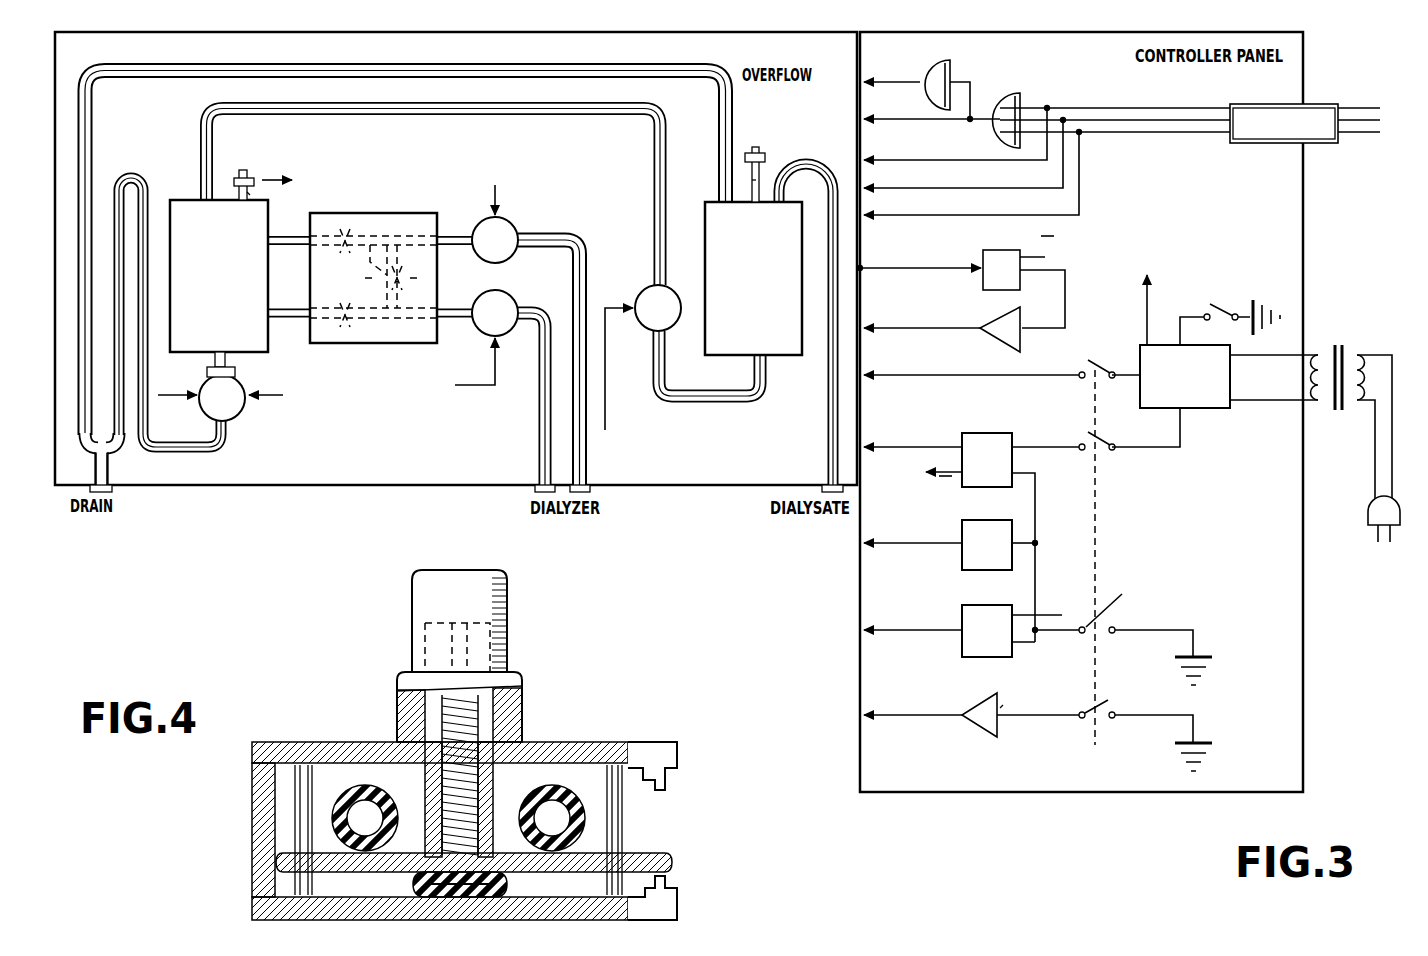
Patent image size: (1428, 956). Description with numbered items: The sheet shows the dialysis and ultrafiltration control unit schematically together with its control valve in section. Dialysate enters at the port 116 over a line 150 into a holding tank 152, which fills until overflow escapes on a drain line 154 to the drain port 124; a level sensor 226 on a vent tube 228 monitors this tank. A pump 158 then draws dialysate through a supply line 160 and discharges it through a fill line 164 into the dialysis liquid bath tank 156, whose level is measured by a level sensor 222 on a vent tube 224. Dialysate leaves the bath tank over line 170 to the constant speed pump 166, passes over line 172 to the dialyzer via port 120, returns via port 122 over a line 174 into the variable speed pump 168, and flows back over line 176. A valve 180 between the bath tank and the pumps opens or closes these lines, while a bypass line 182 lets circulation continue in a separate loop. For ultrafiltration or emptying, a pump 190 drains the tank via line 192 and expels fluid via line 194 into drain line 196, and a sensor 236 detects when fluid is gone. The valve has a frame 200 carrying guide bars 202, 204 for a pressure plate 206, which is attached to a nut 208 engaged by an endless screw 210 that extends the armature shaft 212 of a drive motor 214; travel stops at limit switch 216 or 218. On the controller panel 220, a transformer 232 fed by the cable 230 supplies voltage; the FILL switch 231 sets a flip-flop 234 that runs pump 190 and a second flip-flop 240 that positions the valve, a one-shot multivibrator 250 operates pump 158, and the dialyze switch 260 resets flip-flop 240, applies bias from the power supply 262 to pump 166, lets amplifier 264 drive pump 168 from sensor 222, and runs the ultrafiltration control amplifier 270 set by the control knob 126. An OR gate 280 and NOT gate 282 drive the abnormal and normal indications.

In FIG. 3, the drain line 154 is at (445, 67).
In FIG. 3, the fill line 164 is at (398, 113).
In FIG. 3, the line 194 is at (125, 176).
In FIG. 3, the drain line 196 is at (108, 462).
In FIG. 3, the drain port 124 is at (112, 489).
In FIG. 3, the line 150 is at (830, 366).
In FIG. 3, the port 116 is at (830, 485).
In FIG. 3, the supply line 160 is at (720, 393).
In FIG. 3, the line 172 is at (588, 268).
In FIG. 3, the port 120 is at (592, 490).
In FIG. 3, the line 174 is at (540, 402).
In FIG. 3, the port 122 is at (535, 485).
In FIG. 3, the line 170 is at (288, 243).
In FIG. 4, the line 170 is at (530, 801).
In FIG. 3, the line 176 is at (288, 317).
In FIG. 4, the line 176 is at (390, 803).
In FIG. 3, the dialysis liquid bath tank 156 is at (225, 236).
In FIG. 3, the holding tank 152 is at (762, 238).
In FIG. 3, the valve 180 is at (410, 213).
In FIG. 4, the valve 180 is at (575, 733).
In FIG. 3, the bypass line 182 is at (372, 250).
In FIG. 4, the bypass line 182 is at (505, 888).
In FIG. 3, the pump 166 is at (505, 232).
In FIG. 3, the pump 168 is at (505, 304).
In FIG. 3, the pump 158 is at (648, 292).
In FIG. 3, the pump 190 is at (234, 408).
In FIG. 3, the level sensor 222 is at (235, 178).
In FIG. 3, the vent tube 224 is at (247, 193).
In FIG. 3, the level sensor 226 is at (745, 157).
In FIG. 3, the vent tube 228 is at (752, 180).
In FIG. 3, the line 192 is at (213, 360).
In FIG. 3, the sensor 236 is at (236, 373).
In FIG. 3, the NOT gate 282 is at (940, 68).
In FIG. 3, the OR gate 280 is at (1020, 109).
In FIG. 3, the controller panel 220 is at (1305, 230).
In FIG. 3, the amplifier 264 is at (987, 318).
In FIG. 3, the power supply 262 is at (1207, 410).
In FIG. 3, the flip-flop 240 is at (981, 433).
In FIG. 3, the one-shot multivibrator 250 is at (968, 521).
In FIG. 3, the flip-flop 234 is at (966, 608).
In FIG. 3, the FILL switch 231 is at (1104, 604).
In FIG. 3, the ultrafiltration control amplifier 270 is at (975, 709).
In FIG. 3, the control knob 126 is at (1002, 703).
In FIG. 3, the dialyze switch 260 is at (1100, 725).
In FIG. 3, the transformer 232 is at (1346, 351).
In FIG. 3, the cable 230 is at (1375, 468).
In FIG. 4, the drive motor 214 is at (508, 603).
In FIG. 4, the armature shaft 212 is at (490, 646).
In FIG. 4, the nut 208 is at (492, 735).
In FIG. 4, the frame 200 is at (260, 812).
In FIG. 4, the limit switch 218 is at (677, 756).
In FIG. 4, the limit switch 216 is at (675, 898).
In FIG. 4, the guide bar 202 is at (305, 808).
In FIG. 4, the guide bar 204 is at (613, 798).
In FIG. 4, the pressure plate 206 is at (640, 854).
In FIG. 4, the endless screw 210 is at (443, 726).